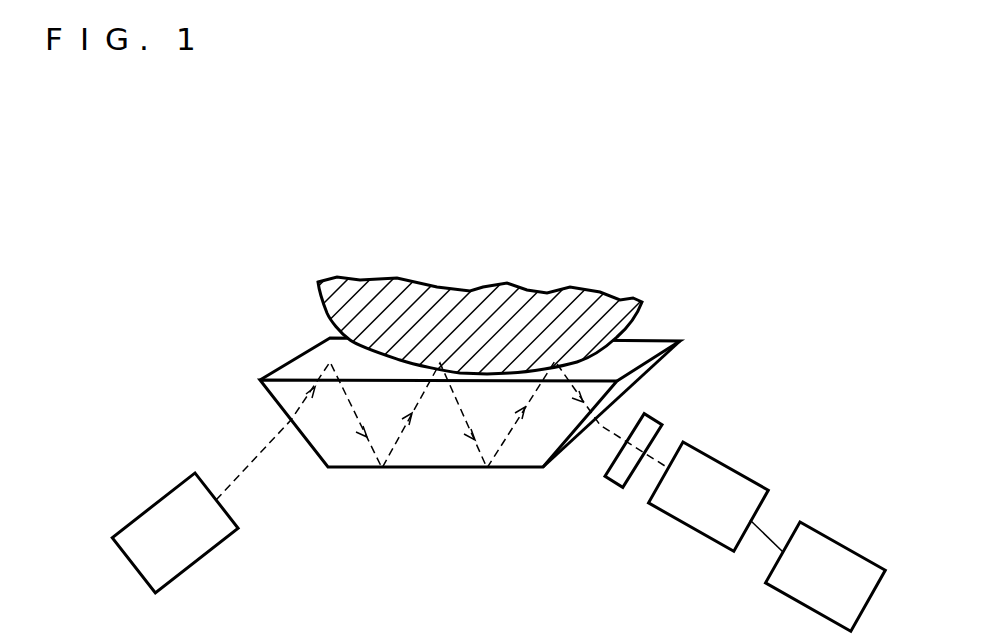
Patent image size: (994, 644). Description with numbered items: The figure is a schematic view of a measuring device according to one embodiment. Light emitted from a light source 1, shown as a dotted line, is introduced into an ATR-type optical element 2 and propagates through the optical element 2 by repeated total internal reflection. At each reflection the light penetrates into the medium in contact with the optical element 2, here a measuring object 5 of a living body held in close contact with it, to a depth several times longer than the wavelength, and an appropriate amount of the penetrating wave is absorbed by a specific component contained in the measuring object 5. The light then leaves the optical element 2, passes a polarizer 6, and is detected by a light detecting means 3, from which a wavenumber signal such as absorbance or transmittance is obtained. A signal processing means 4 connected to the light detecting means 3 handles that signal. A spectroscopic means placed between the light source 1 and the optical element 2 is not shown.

The light source 1 is at (195, 553).
The optical element 2 is at (365, 397).
The light detecting means 3 is at (720, 472).
The signal processing means 4 is at (830, 555).
The measuring object 5 is at (570, 312).
The polarizer 6 is at (652, 425).